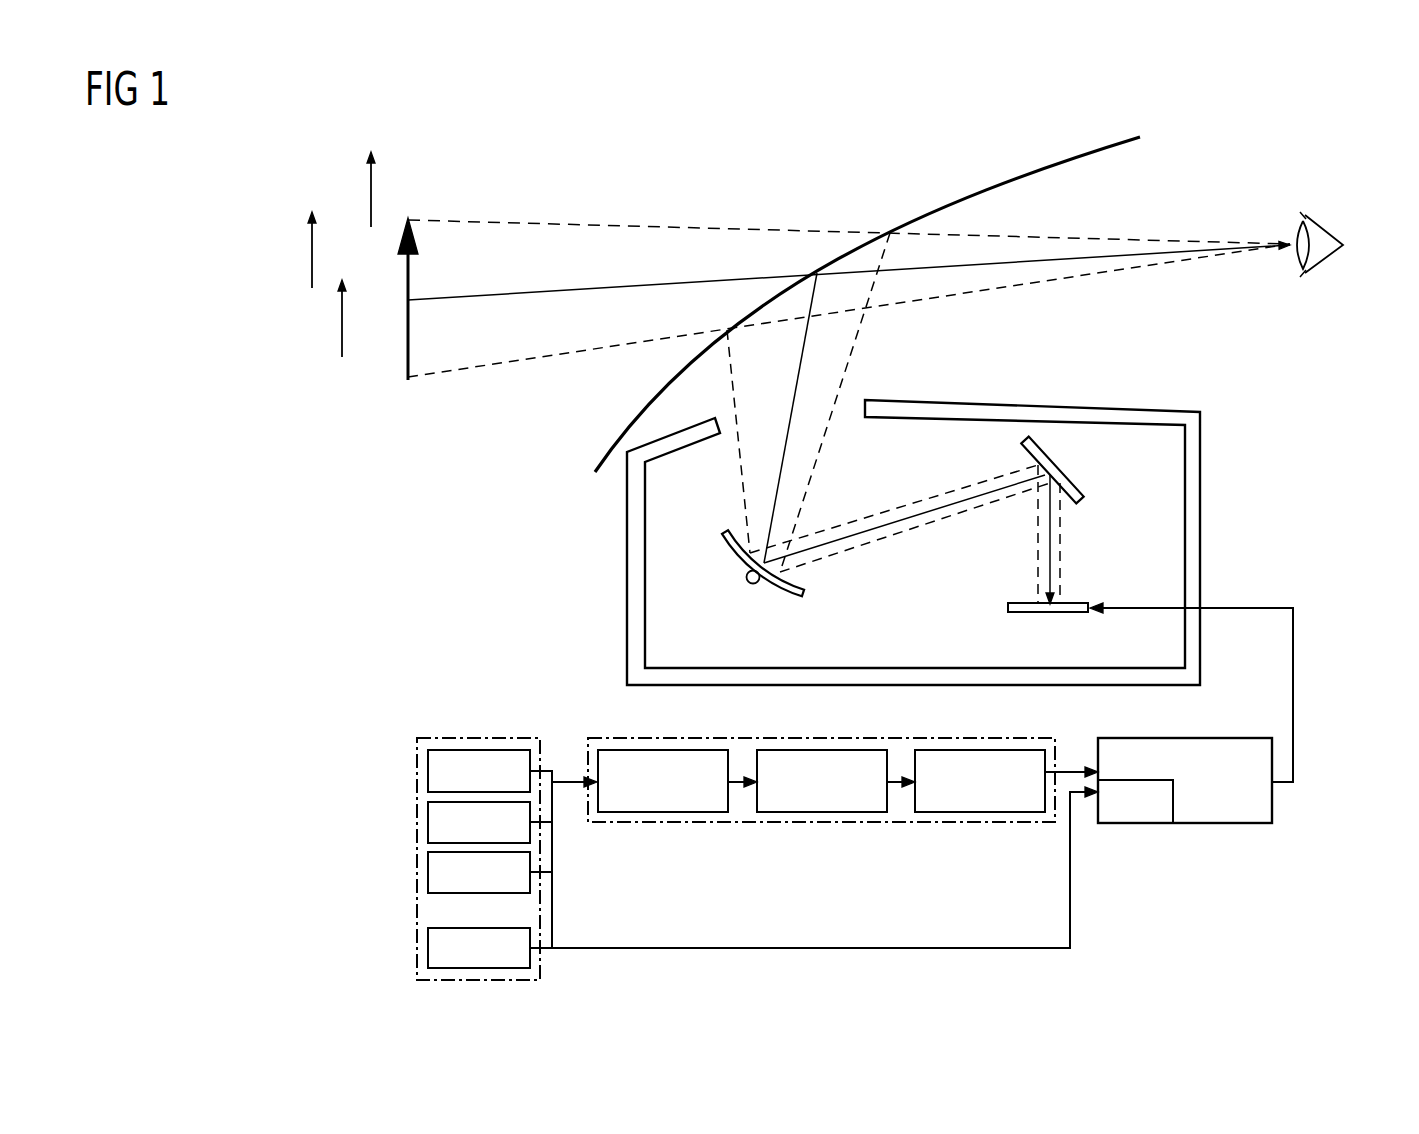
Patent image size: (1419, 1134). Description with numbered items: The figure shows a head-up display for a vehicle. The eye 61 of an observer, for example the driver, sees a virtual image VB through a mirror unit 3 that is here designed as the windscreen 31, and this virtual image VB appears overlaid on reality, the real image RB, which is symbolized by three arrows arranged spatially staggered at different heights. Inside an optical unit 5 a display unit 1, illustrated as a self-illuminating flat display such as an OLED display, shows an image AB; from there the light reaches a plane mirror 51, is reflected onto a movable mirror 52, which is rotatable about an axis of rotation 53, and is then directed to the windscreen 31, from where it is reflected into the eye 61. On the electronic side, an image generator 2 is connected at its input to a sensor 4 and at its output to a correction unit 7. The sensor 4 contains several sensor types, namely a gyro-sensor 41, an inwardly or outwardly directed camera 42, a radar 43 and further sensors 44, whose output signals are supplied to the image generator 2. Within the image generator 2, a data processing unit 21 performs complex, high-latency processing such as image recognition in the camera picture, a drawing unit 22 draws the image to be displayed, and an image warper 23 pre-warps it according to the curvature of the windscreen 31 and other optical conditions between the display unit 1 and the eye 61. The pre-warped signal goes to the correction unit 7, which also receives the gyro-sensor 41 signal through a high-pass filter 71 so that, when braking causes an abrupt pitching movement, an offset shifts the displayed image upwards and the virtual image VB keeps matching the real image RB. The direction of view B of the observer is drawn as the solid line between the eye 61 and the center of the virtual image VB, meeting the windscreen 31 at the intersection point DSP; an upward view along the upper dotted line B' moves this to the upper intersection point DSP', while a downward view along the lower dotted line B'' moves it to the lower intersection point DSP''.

The display unit 1 is at (1068, 606).
The image generator 2 is at (596, 715).
The mirror unit 3 is at (1012, 177).
The windscreen 31 is at (867, 304).
The sensor 4 is at (425, 715).
The optical unit 5 is at (1240, 388).
The correction unit 7 is at (1240, 815).
The data processing unit 21 is at (667, 803).
The drawing unit 22 is at (825, 803).
The image warper 23 is at (983, 803).
The gyro-sensor 41 is at (428, 945).
The camera 42 is at (428, 768).
The radar 43 is at (428, 819).
The further sensors 44 is at (428, 869).
The plane mirror 51 is at (1077, 489).
The movable mirror 52 is at (785, 588).
The axis of rotation 53 is at (745, 578).
The eye 61 is at (1318, 234).
The high-pass filter 71 is at (1110, 823).
The real image RB is at (388, 152).
The virtual image VB is at (408, 353).
The direction of view B is at (849, 210).
The upper direction of view B' is at (849, 183).
The lower direction of view B'' is at (849, 341).
The intersection point DSP is at (794, 344).
The upper intersection point DSP' is at (846, 351).
The lower intersection point DSP'' is at (726, 339).
The image AB is at (1040, 608).